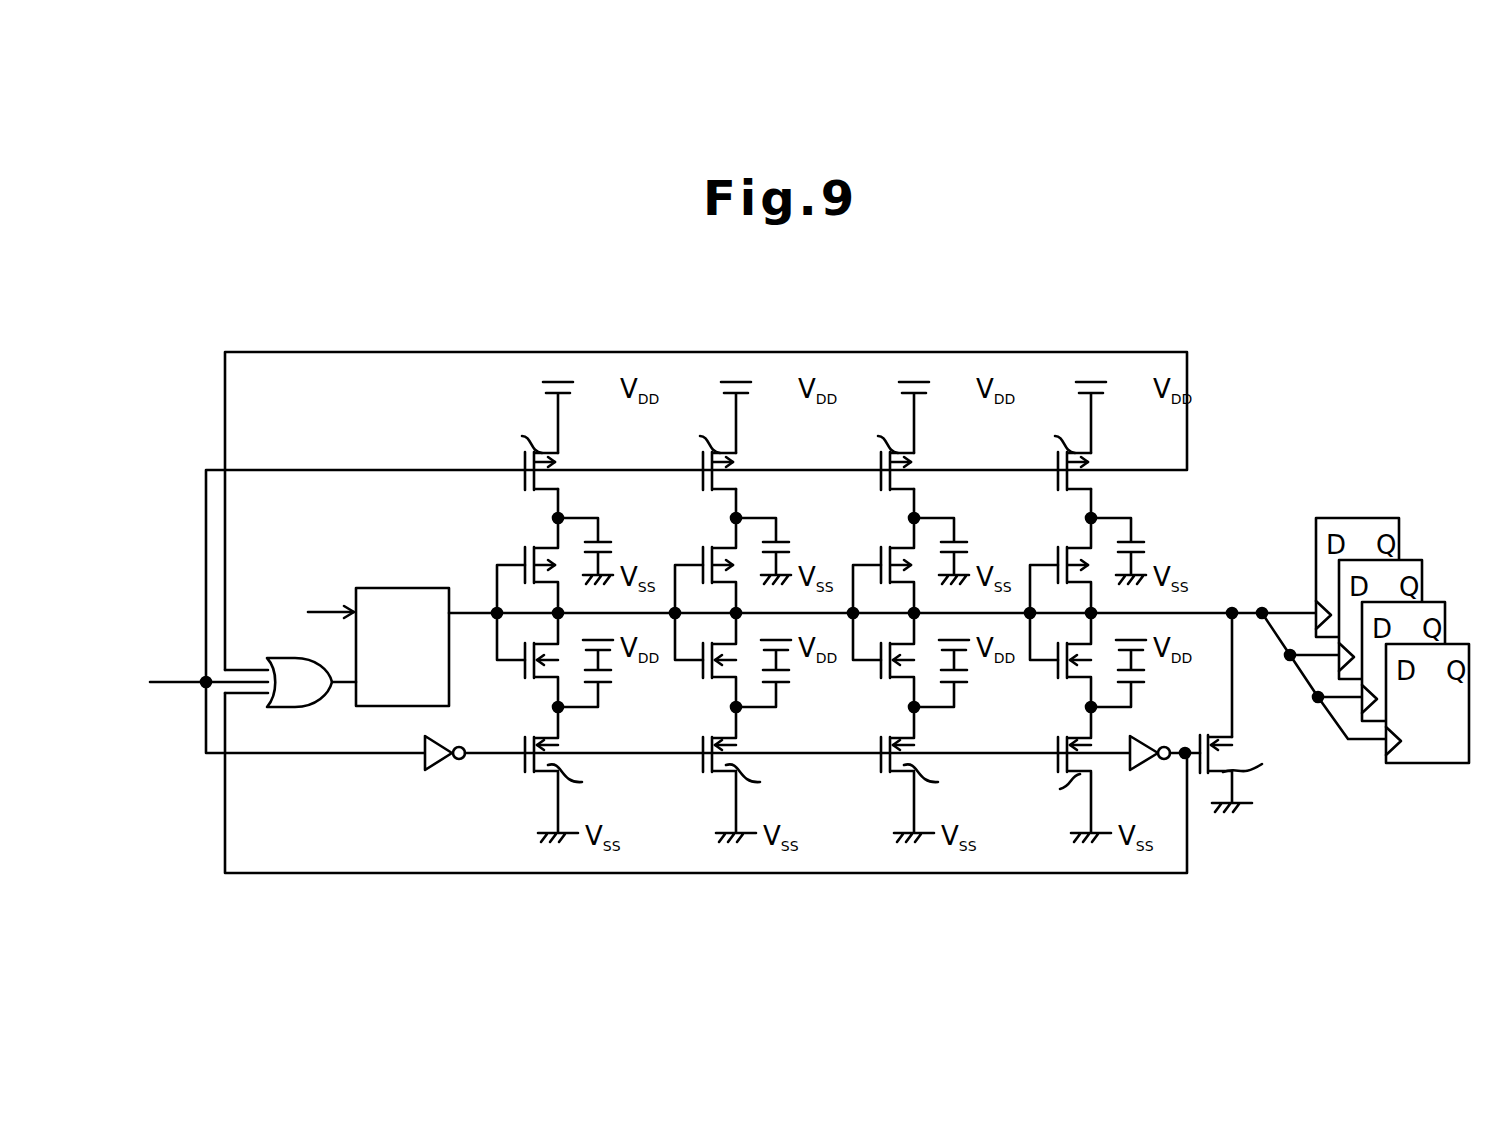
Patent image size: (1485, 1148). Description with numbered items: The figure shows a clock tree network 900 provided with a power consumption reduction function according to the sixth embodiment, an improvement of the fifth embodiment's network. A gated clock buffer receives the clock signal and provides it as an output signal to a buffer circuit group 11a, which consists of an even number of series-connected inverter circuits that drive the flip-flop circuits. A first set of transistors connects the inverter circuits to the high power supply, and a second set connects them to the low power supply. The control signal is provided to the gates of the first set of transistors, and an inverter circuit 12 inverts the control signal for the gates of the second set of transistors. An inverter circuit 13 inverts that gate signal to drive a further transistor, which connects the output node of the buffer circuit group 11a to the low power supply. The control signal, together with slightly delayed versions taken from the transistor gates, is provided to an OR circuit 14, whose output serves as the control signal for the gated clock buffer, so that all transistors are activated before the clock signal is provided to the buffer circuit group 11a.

The clock tree network 900 is at (262, 262).
The buffer circuit group 11a is at (1164, 508).
The inverter circuit 12 is at (440, 771).
The inverter circuit 13 is at (1147, 773).
The OR circuit 14 is at (304, 698).